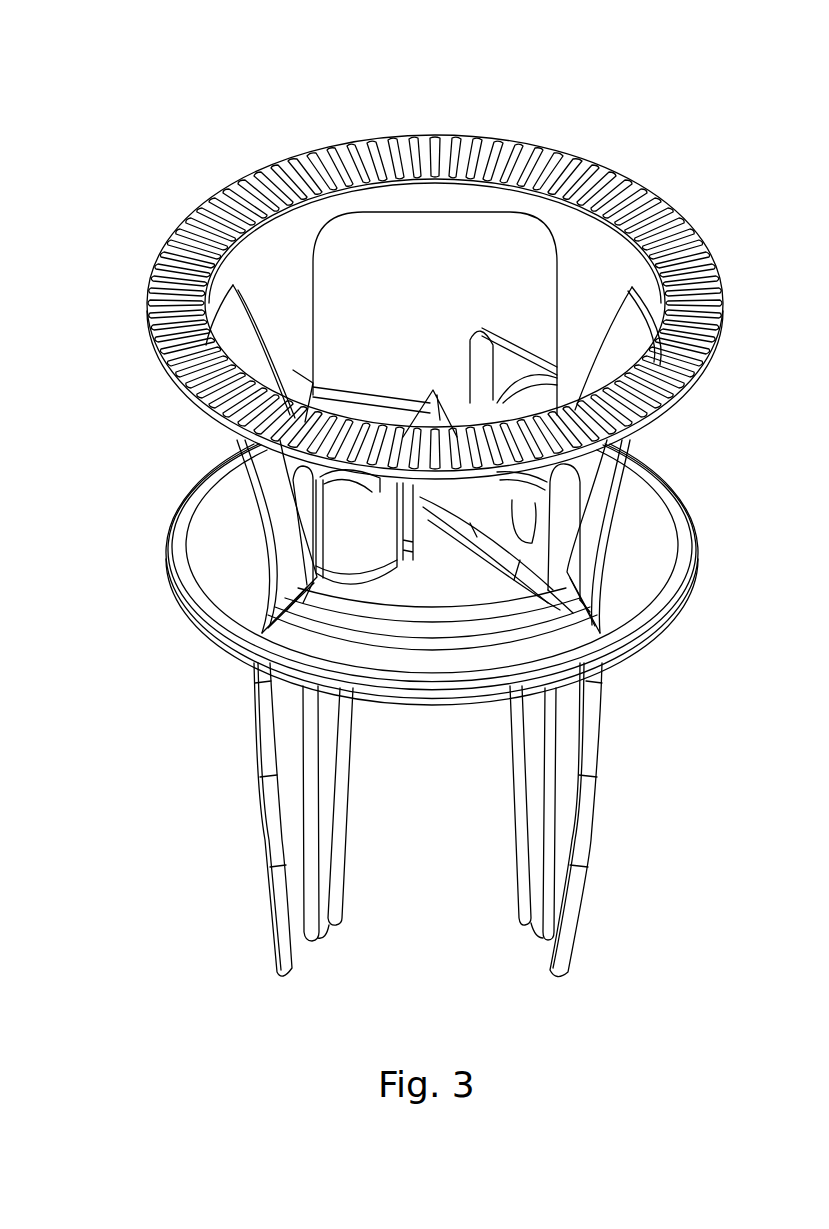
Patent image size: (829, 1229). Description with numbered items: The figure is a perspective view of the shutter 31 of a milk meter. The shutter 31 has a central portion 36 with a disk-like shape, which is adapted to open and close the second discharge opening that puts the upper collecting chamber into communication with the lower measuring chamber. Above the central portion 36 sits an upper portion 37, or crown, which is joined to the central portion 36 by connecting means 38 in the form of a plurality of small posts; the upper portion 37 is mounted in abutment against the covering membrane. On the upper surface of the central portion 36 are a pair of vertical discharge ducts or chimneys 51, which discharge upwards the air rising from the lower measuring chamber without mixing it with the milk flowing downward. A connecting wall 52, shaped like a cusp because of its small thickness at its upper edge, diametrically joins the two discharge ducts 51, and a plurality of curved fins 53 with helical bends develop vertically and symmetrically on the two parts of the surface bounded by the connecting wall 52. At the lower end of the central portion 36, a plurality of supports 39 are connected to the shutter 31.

The shutter 31 is at (654, 100).
The central portion 36 is at (690, 512).
The upper portion 37 is at (228, 184).
The connecting means 38 is at (256, 305).
The support 39 is at (266, 778).
The vertical discharge duct 51 is at (480, 323).
The connecting wall 52 is at (432, 400).
The curved fins 53 is at (325, 380).